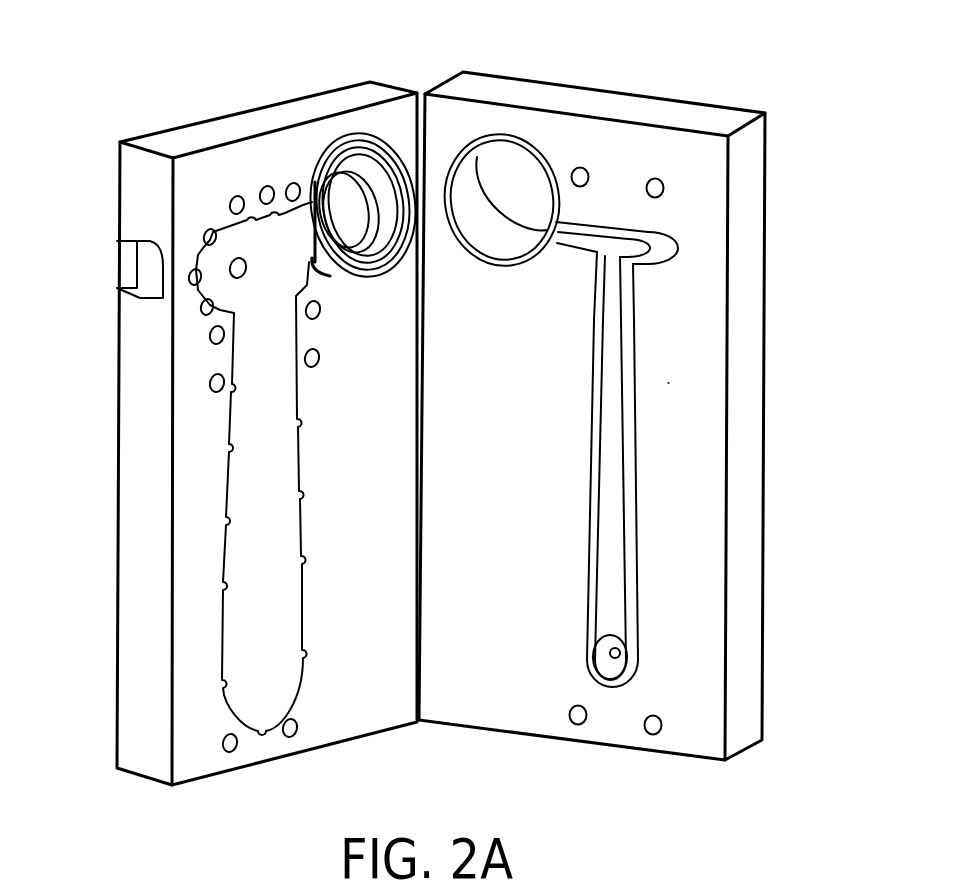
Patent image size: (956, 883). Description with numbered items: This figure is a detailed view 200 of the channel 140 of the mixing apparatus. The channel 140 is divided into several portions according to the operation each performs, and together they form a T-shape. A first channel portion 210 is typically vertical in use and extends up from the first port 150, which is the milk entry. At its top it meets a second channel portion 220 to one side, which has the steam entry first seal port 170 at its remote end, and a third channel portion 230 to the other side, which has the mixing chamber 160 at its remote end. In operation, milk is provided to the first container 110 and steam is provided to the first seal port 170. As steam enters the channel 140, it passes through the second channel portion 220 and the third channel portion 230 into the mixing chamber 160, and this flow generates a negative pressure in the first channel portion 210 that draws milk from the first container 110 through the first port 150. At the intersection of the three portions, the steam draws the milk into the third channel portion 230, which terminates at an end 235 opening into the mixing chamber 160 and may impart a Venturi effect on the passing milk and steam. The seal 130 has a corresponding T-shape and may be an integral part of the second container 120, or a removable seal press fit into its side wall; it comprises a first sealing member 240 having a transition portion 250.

The detailed view 200 is at (129, 73).
The first container 110 is at (703, 118).
The second container 120 is at (352, 100).
The seal 130 is at (248, 485).
The channel 140 is at (678, 383).
The first port 150 is at (620, 653).
The mixing chamber 160 is at (493, 185).
The first seal port 170 is at (233, 265).
The first channel portion 210 is at (612, 447).
The second channel portion 220 is at (660, 248).
The third channel portion 230 is at (620, 255).
The end 235 is at (562, 228).
The first sealing member 240 is at (327, 177).
The transition portion 250 is at (313, 237).